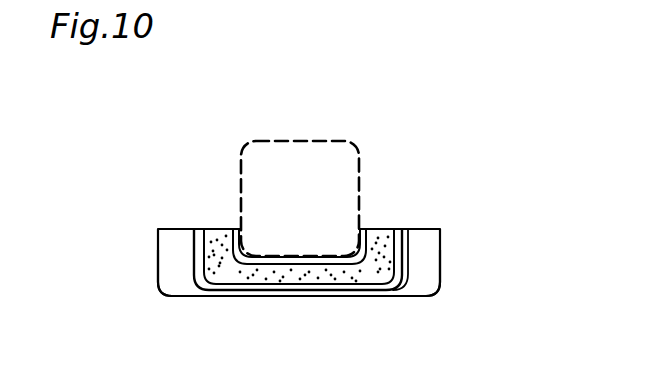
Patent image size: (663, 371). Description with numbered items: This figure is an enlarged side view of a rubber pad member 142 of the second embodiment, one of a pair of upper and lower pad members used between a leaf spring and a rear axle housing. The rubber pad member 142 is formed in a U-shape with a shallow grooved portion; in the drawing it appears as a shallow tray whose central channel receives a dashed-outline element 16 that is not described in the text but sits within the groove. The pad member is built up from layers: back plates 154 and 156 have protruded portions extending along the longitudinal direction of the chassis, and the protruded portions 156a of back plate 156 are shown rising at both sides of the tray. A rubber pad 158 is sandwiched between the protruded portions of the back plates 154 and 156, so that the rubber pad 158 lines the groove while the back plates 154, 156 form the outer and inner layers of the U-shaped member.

The product / article 16 is at (360, 182).
The rubber pad member 142 is at (426, 209).
The back plate 154 is at (252, 267).
The back plate 156 is at (316, 288).
The protruded portion 156a is at (180, 270).
The rubber pad 158 is at (386, 272).